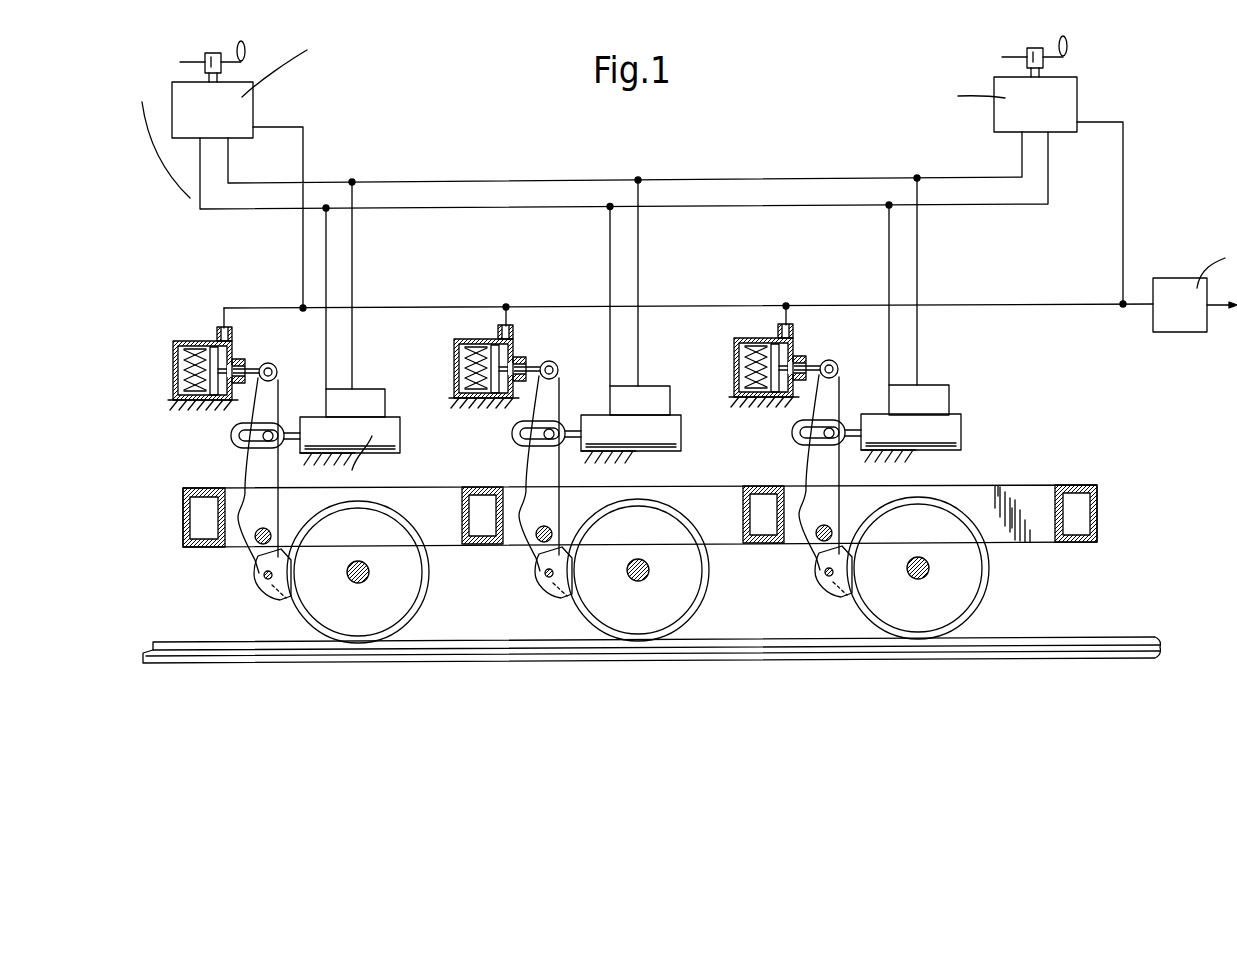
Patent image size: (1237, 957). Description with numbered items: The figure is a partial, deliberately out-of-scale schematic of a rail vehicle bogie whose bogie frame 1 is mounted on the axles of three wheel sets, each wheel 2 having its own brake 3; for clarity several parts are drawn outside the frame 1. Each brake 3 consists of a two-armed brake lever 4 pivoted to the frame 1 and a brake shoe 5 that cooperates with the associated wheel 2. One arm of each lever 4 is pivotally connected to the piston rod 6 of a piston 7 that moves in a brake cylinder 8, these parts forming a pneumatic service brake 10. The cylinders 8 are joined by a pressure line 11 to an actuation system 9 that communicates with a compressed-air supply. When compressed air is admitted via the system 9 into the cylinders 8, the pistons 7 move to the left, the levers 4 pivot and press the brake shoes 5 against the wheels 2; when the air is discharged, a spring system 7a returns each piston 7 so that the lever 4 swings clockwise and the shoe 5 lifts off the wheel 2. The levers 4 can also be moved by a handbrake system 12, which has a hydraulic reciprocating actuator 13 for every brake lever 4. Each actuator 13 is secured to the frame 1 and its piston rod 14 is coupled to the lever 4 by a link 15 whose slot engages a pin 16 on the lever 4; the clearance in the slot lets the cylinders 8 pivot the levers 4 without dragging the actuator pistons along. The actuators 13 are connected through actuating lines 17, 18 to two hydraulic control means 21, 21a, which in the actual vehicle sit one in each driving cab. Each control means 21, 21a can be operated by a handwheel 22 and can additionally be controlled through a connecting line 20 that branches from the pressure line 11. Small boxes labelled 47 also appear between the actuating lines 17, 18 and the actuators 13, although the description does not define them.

The bogie frame 1 is at (1038, 484).
The wheel 2 is at (403, 598).
The brake 3 is at (246, 597).
The brake lever 4 is at (253, 473).
The brake shoe 5 is at (278, 596).
The piston rod 6 is at (266, 364).
The piston 7 is at (212, 348).
The spring system 7a is at (184, 371).
The brake cylinder 8 is at (184, 343).
The actuation system 9 is at (1173, 332).
The service brake 10 is at (157, 405).
The pressure line 11 is at (1033, 303).
The handbrake system 12 is at (990, 376).
The hydraulic reciprocating actuator 13 is at (412, 435).
The piston rod 14 is at (289, 428).
The link 15 is at (234, 437).
The pin 16 is at (268, 442).
The actuating line 17 is at (327, 271).
The actuating line 18 is at (353, 238).
The connecting line 20 is at (304, 157).
The hydraulic control means 21 is at (262, 103).
The hydraulic control means 21a is at (1089, 94).
The handwheel 22 is at (246, 51).
The actuator control valve 47 is at (368, 389).